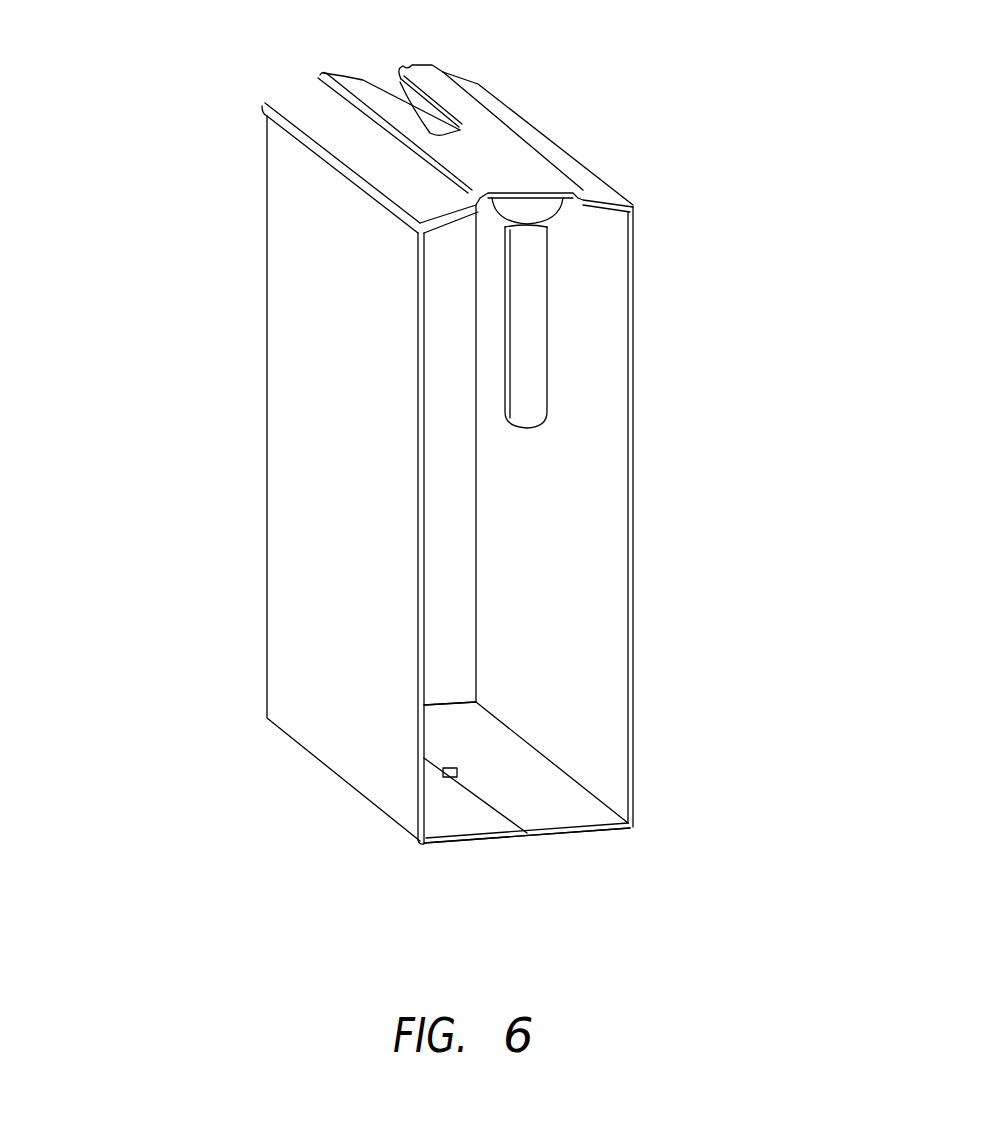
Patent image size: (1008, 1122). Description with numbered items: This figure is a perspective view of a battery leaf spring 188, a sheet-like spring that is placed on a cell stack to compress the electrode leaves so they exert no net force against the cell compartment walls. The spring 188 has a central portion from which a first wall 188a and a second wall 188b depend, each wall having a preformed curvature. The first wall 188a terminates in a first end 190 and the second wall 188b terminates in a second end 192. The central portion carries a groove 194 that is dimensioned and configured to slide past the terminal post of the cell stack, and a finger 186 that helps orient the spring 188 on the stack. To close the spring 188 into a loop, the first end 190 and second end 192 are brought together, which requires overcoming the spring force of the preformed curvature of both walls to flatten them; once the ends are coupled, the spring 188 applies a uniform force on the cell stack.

The finger 186 is at (529, 317).
The leaf spring 188 is at (457, 465).
The first wall 188a is at (310, 453).
The second wall 188b is at (872, 458).
The first end 190 is at (515, 837).
The second end 192 is at (543, 835).
The groove 194 is at (430, 100).